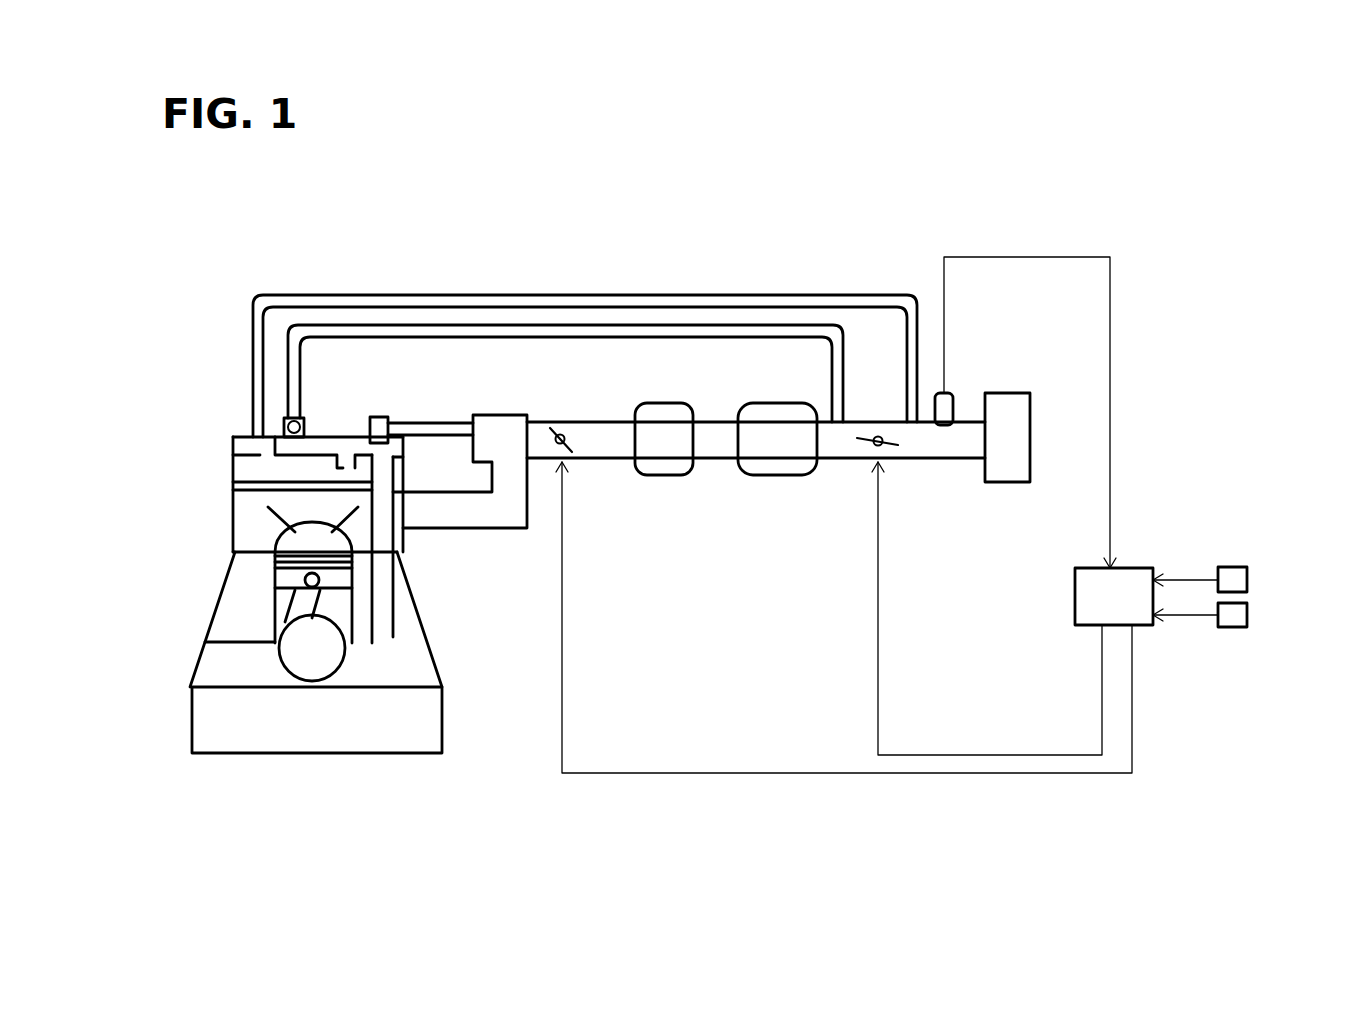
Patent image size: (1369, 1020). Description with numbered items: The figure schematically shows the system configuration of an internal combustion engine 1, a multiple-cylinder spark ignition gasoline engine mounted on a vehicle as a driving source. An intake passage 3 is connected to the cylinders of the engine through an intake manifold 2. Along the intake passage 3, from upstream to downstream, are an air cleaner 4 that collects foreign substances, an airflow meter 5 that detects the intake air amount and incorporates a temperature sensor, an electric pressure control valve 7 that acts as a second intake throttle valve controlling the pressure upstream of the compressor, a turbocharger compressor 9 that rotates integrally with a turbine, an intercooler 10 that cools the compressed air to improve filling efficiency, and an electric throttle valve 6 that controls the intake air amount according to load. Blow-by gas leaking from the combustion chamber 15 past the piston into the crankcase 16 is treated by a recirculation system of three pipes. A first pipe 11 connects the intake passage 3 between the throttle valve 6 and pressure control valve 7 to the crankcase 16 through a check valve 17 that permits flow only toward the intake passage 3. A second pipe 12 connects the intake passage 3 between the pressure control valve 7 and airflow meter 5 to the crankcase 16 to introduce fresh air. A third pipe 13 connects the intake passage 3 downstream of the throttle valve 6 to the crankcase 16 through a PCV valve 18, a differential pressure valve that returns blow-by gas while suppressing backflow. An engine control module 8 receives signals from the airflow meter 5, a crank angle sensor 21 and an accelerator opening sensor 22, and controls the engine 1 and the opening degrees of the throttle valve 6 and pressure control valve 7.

The internal combustion engine 1 is at (183, 608).
The intake manifold 2 is at (450, 513).
The intake passage 3 is at (607, 443).
The air cleaner 4 is at (1008, 470).
The airflow meter 5 is at (950, 395).
The throttle valve 6 is at (565, 425).
The pressure control valve 7 is at (868, 449).
The engine control module 8 is at (1100, 607).
The compressor 9 is at (772, 455).
The intercooler 10 is at (665, 460).
The first pipe 11 is at (675, 332).
The second pipe 12 is at (648, 300).
The third pipe 13 is at (430, 423).
The combustion chamber 15 is at (272, 543).
The crankcase 16 is at (228, 658).
The check valve 17 is at (305, 418).
The PCV valve 18 is at (380, 417).
The crank angle sensor 21 is at (1240, 577).
The accelerator opening sensor 22 is at (1232, 617).